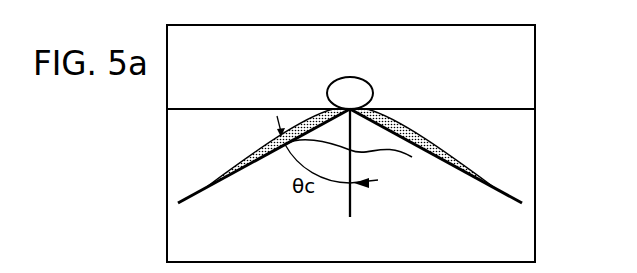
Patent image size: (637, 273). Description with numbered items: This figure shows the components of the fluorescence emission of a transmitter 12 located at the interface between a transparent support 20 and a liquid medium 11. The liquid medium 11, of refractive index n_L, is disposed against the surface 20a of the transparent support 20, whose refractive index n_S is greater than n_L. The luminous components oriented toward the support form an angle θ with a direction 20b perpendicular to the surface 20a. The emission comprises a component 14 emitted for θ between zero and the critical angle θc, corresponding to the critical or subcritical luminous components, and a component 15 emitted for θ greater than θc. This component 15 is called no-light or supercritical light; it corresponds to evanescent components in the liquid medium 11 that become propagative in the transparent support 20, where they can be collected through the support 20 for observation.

The liquid medium 11 is at (508, 63).
The transmitter 12 is at (353, 95).
The component emitted for θ between 0 and θc 14 is at (387, 137).
The supercritical light component 15 is at (302, 125).
The transparent support 20 is at (505, 147).
The surface of the support 20a is at (477, 109).
The direction perpendicular to the surface 20b is at (352, 207).